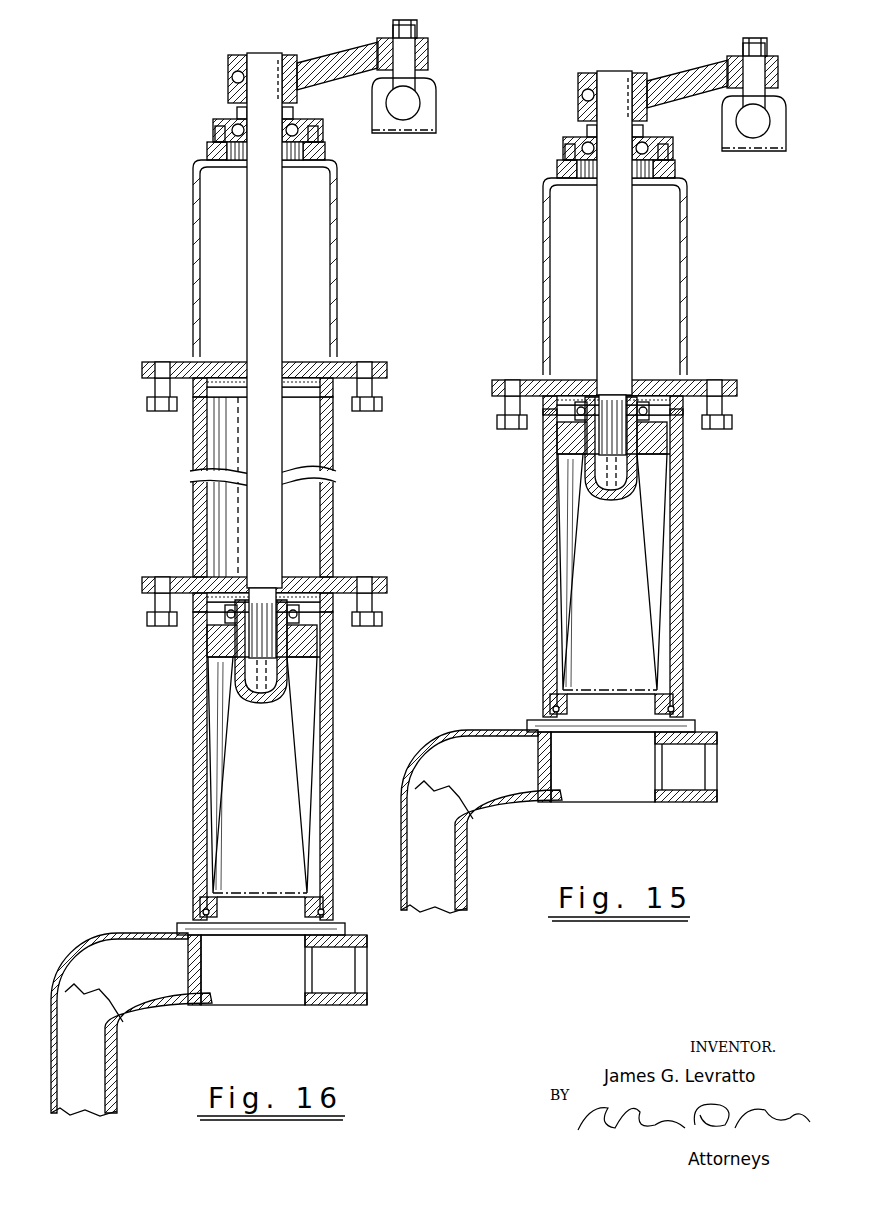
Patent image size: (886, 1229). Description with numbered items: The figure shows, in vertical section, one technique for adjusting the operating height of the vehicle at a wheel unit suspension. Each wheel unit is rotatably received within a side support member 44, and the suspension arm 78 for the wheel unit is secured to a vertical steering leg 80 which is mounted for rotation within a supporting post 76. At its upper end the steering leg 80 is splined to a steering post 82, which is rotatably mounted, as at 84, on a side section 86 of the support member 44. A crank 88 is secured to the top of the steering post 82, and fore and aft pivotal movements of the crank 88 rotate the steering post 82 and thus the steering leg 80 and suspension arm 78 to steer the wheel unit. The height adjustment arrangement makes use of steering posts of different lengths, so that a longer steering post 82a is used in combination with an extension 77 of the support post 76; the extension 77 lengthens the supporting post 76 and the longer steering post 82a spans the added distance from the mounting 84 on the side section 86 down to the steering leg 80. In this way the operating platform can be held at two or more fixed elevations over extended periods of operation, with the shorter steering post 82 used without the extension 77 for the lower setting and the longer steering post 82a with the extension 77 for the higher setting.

In FIG. 16, the side support member 44 is at (262, 258).
In FIG. 15, the side support member 44 is at (615, 276).
In FIG. 16, the supporting post 76 is at (333, 740).
In FIG. 15, the supporting post 76 is at (639, 563).
In FIG. 16, the extension 77 is at (200, 503).
In FIG. 16, the suspension arm 78 is at (118, 932).
In FIG. 15, the suspension arm 78 is at (481, 794).
In FIG. 16, the vertical steering leg 80 is at (230, 793).
In FIG. 15, the vertical steering leg 80 is at (584, 572).
In FIG. 15, the steering post 82 is at (612, 248).
In FIG. 16, the steering post 82a is at (260, 255).
In FIG. 16, the rotatable mounting 84 is at (225, 113).
In FIG. 15, the rotatable mounting 84 is at (601, 144).
In FIG. 16, the side section 86 is at (334, 247).
In FIG. 15, the side section 86 is at (583, 276).
In FIG. 16, the crank 88 is at (335, 62).
In FIG. 15, the crank 88 is at (682, 93).